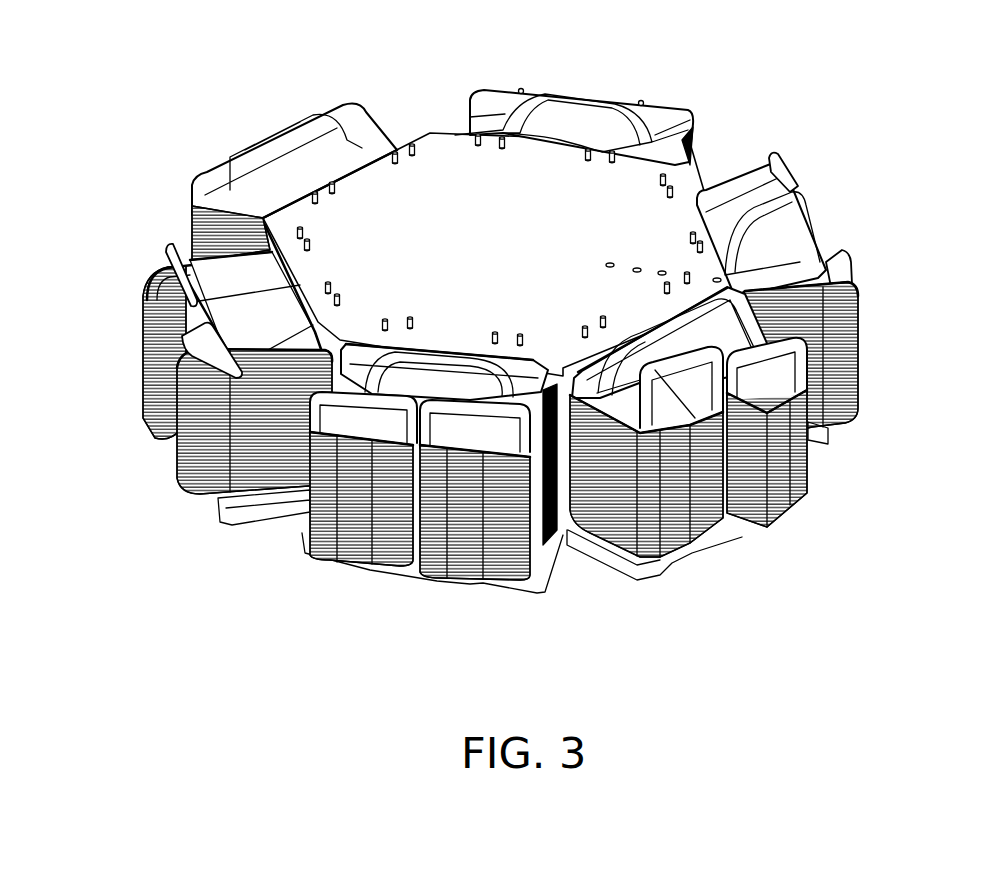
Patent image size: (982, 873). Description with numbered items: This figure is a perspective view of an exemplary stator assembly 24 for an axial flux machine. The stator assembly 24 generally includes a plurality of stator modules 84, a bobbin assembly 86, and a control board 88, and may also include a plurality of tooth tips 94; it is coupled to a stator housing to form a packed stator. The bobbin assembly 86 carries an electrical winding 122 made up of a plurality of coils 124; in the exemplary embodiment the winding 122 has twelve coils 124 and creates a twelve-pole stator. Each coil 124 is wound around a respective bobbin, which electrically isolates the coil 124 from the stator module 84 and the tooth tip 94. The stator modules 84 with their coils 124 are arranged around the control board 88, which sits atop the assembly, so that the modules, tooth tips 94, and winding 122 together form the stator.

The stator assembly 24 is at (146, 126).
The control board 88 is at (438, 197).
The stator module 84 is at (785, 203).
The bobbin assembly 86 is at (840, 228).
The electrical winding 122 is at (870, 348).
The coil 124 is at (145, 348).
The tooth tip 94 is at (327, 562).